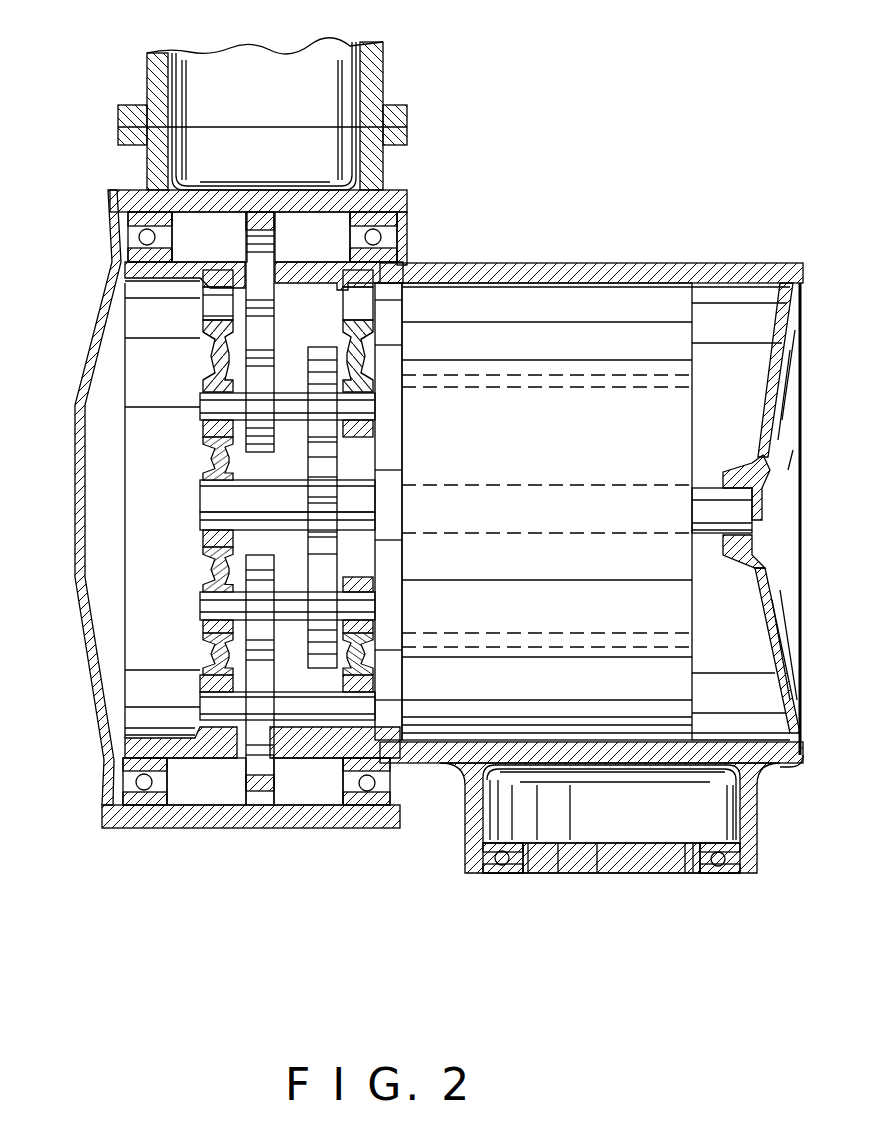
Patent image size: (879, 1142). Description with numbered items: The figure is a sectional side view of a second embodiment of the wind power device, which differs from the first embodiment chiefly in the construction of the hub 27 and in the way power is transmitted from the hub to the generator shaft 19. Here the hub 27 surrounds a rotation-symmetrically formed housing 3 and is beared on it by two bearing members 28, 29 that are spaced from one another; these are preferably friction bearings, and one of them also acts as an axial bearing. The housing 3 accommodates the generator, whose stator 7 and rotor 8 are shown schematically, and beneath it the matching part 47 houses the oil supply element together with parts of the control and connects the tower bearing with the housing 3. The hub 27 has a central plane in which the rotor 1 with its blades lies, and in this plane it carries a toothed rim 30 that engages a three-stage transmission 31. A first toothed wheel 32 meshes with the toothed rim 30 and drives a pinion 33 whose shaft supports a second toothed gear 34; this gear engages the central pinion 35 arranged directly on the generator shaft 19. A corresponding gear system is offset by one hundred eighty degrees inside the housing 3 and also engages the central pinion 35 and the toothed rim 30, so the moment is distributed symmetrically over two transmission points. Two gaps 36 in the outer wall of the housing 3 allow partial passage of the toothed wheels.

The rotor 1 is at (373, 72).
The hub 27 is at (373, 182).
The toothed rim 30 is at (152, 190).
The bearing member 28 is at (128, 242).
The bearing member 29 is at (397, 250).
The housing 3 is at (598, 270).
The three-stage transmission 31 is at (132, 453).
The gap 36 is at (257, 297).
The first toothed wheel 32 is at (220, 360).
The pinion 33 is at (253, 415).
The second toothed gear 34 is at (380, 447).
The central pinion 35 is at (330, 497).
The rotor 8 is at (627, 423).
The stator 7 is at (633, 688).
The generator shaft 19 is at (717, 520).
The matching part 47 is at (703, 813).